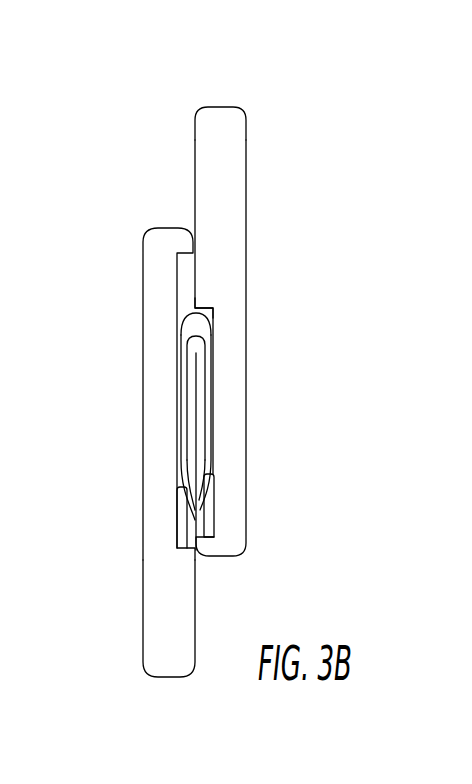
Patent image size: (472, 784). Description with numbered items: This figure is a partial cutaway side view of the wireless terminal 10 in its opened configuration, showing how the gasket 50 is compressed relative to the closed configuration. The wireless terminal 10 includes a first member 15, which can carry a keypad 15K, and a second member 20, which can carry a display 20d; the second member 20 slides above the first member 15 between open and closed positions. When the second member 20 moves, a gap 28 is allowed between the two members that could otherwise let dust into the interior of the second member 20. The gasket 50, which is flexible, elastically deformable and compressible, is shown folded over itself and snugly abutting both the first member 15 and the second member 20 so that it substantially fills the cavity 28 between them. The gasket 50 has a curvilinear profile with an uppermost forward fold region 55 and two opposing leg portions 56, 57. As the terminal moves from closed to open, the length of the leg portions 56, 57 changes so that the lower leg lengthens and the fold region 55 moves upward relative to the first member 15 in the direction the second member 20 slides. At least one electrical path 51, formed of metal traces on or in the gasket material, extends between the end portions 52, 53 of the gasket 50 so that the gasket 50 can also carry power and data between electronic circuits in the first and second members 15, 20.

The wireless terminal 10 is at (168, 112).
The first member 15 is at (148, 258).
The keypad 15K is at (195, 603).
The second member 20 is at (237, 198).
The display 20d is at (246, 147).
The gap 28 is at (200, 308).
The gasket 50 is at (213, 374).
The electrical path 51 is at (205, 412).
The end portion of the gasket 52 is at (178, 515).
The end portion of the gasket 53 is at (215, 494).
The forward fold region 55 is at (190, 318).
The leg portion 56 is at (177, 373).
The leg portion 57 is at (212, 336).